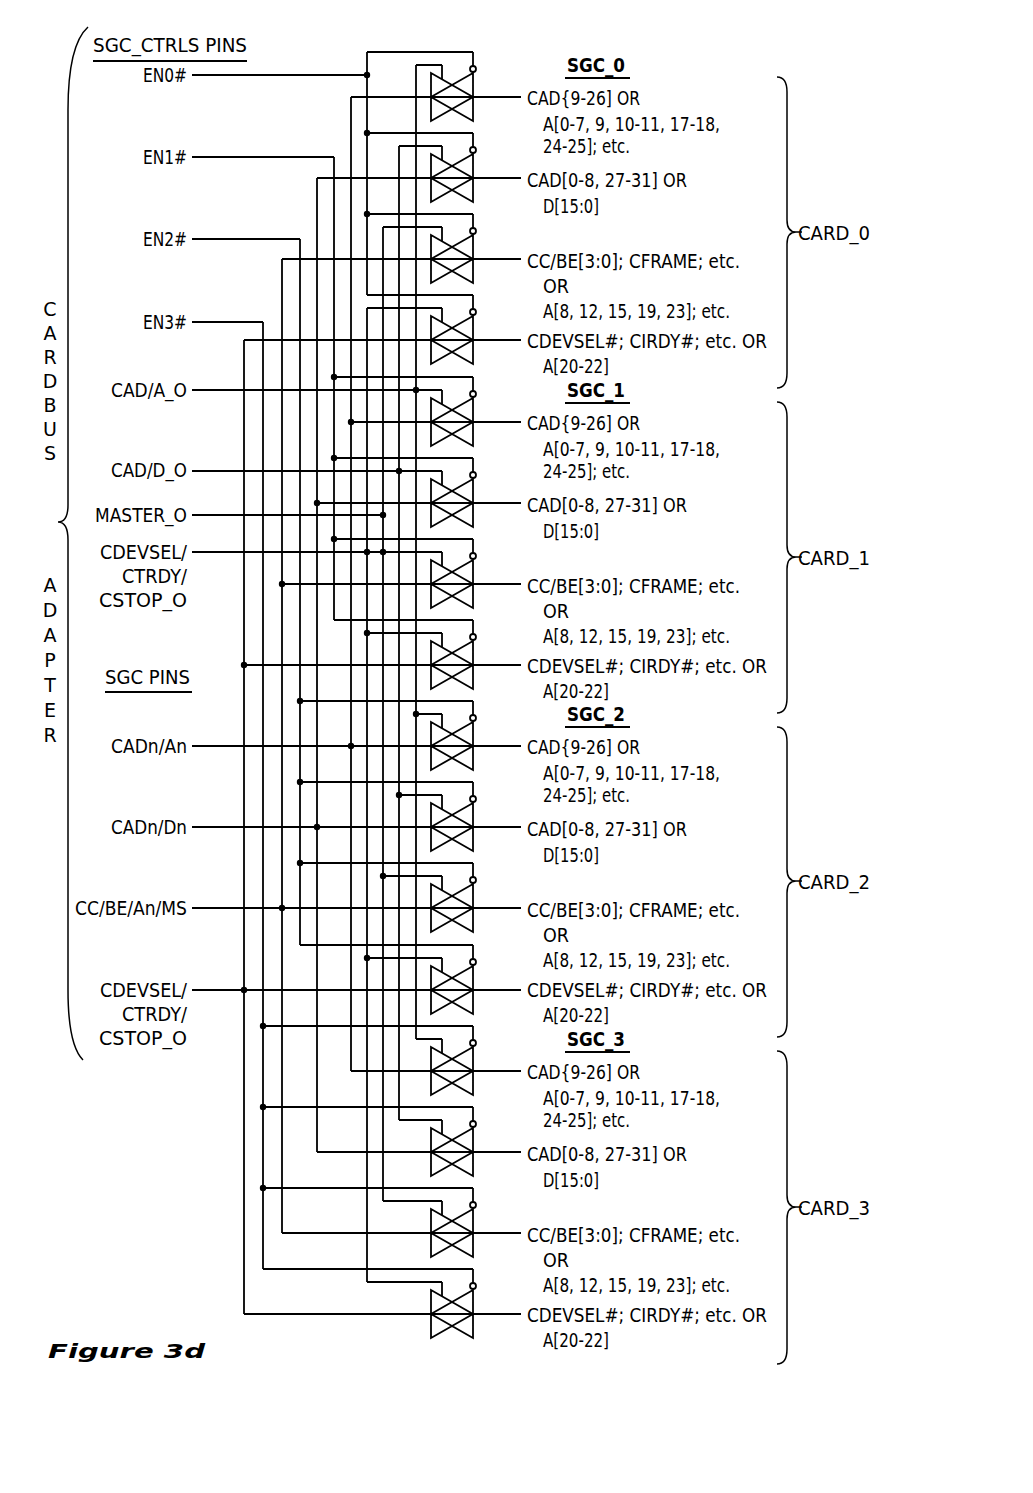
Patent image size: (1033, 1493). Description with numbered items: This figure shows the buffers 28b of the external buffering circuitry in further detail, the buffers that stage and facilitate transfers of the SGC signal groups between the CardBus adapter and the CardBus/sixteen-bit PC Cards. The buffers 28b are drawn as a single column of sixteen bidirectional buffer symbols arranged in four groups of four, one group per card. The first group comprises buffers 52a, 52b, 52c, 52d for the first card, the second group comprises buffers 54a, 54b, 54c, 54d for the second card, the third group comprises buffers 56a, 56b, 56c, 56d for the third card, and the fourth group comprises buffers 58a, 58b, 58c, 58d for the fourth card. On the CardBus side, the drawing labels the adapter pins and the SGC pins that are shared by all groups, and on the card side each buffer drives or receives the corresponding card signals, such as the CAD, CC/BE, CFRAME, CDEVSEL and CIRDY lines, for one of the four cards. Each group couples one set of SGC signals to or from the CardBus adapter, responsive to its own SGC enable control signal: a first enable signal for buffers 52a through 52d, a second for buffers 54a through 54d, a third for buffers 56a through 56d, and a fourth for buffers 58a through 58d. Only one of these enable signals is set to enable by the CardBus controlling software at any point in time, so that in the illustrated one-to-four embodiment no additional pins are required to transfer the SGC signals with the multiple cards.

The buffers 28b is at (376, 29).
The buffer 52a is at (475, 87).
The buffer 52b is at (475, 168).
The buffer 52c is at (475, 249).
The buffer 52d is at (475, 330).
The buffer 54a is at (475, 412).
The buffer 54b is at (475, 493).
The buffer 54c is at (475, 574).
The buffer 54d is at (475, 655).
The buffer 56a is at (475, 736).
The buffer 56b is at (475, 817).
The buffer 56c is at (475, 898).
The buffer 56d is at (475, 980).
The buffer 58a is at (475, 1061).
The buffer 58b is at (475, 1142).
The buffer 58c is at (475, 1223).
The buffer 58d is at (475, 1304).